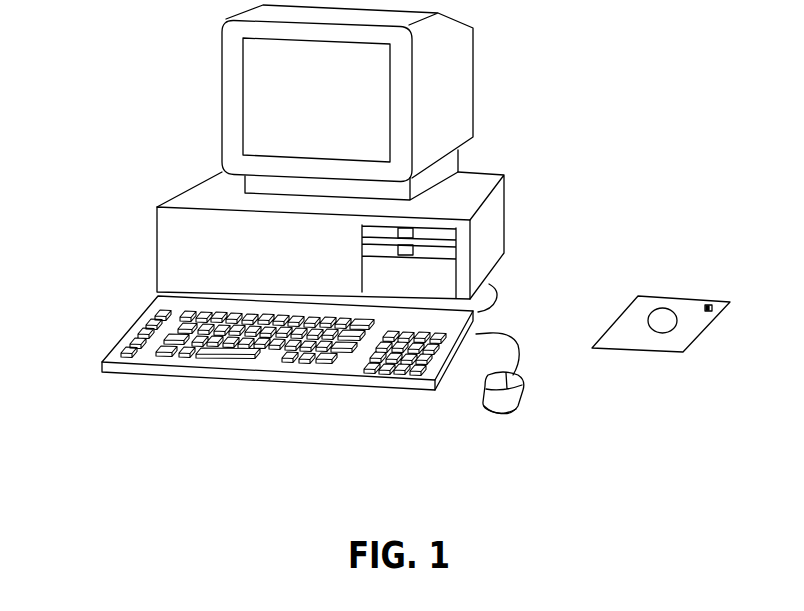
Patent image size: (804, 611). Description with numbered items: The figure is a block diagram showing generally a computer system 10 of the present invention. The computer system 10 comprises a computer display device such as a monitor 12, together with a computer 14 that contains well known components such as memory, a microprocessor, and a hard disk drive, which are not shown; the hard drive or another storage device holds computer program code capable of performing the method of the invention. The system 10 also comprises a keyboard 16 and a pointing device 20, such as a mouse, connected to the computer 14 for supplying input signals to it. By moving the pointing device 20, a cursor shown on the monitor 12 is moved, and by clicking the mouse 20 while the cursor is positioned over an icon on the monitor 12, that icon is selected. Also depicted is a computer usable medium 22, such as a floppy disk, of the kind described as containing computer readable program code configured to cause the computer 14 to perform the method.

The computer system 10 is at (94, 260).
The monitor 12 is at (473, 52).
The computer 14 is at (504, 196).
The keyboard 16 is at (253, 380).
The pointing device 20 is at (524, 387).
The floppy disk / storage medium 22 is at (700, 327).